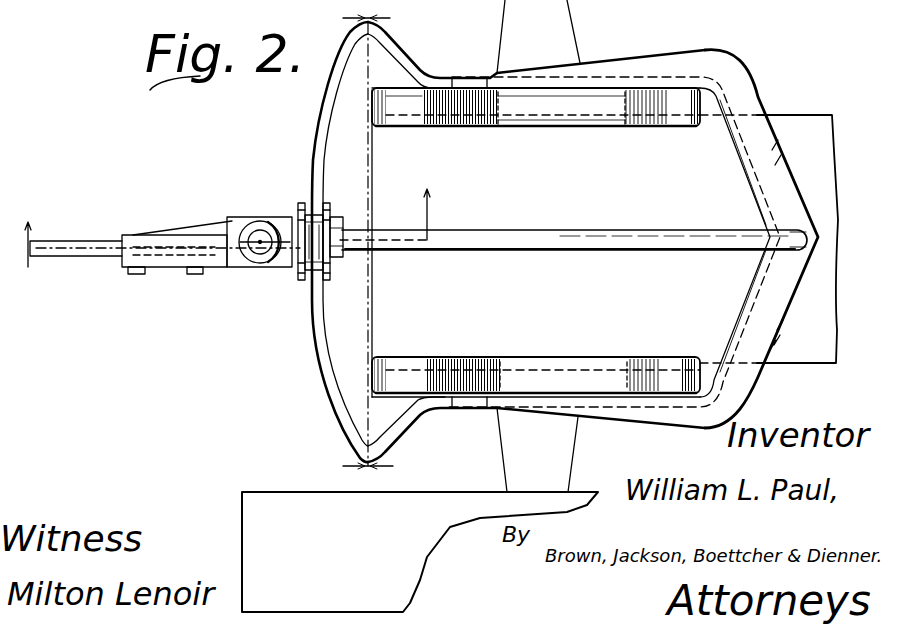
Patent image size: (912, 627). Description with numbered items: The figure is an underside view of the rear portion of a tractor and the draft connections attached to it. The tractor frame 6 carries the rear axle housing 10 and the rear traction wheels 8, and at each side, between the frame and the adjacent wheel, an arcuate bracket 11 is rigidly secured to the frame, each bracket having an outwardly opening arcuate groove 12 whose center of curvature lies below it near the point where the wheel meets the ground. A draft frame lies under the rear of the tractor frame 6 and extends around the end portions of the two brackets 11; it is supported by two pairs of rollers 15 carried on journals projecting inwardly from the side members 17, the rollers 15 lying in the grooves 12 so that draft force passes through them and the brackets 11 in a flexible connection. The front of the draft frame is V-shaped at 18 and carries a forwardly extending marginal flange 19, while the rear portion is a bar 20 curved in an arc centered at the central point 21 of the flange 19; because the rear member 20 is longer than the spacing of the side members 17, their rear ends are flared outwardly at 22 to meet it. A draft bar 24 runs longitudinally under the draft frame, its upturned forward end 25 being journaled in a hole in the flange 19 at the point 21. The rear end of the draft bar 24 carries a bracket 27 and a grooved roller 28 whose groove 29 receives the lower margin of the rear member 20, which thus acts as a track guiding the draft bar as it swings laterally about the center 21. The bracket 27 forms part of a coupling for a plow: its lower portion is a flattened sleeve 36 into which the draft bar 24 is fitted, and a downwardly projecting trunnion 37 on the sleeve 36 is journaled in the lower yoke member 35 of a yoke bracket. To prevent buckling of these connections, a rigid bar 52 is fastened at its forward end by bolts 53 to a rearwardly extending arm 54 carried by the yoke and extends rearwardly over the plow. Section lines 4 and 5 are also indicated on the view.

The section line 4- 4 is at (230, 228).
The section line 5- 5 is at (368, 246).
The tractor frame 6 is at (820, 115).
The rear traction wheels 8 is at (250, 497).
The rear axle housing 10 is at (570, 40).
The bracket 11 is at (697, 82).
The arcuate groove 12 is at (663, 67).
The rollers 15 is at (573, 116).
The side members 17 is at (601, 62).
The V-shaped front portion 18 is at (760, 210).
The marginal flange 19 is at (797, 183).
The rear member 20 is at (313, 157).
The central point 21 is at (810, 233).
The flared rear end portions 22 is at (401, 55).
The draft bar 24 is at (604, 231).
The upturned forward end 25 is at (817, 245).
The bracket 27 is at (273, 272).
The grooved roller 28 is at (301, 277).
The groove 29 is at (310, 274).
The lower yoke member 35 is at (247, 221).
The sleeve 36 is at (287, 218).
The trunnion 37 is at (262, 248).
The rigid bar 52 is at (67, 257).
The bolts 53 is at (170, 303).
The rearwardly extending arm 54 is at (121, 267).